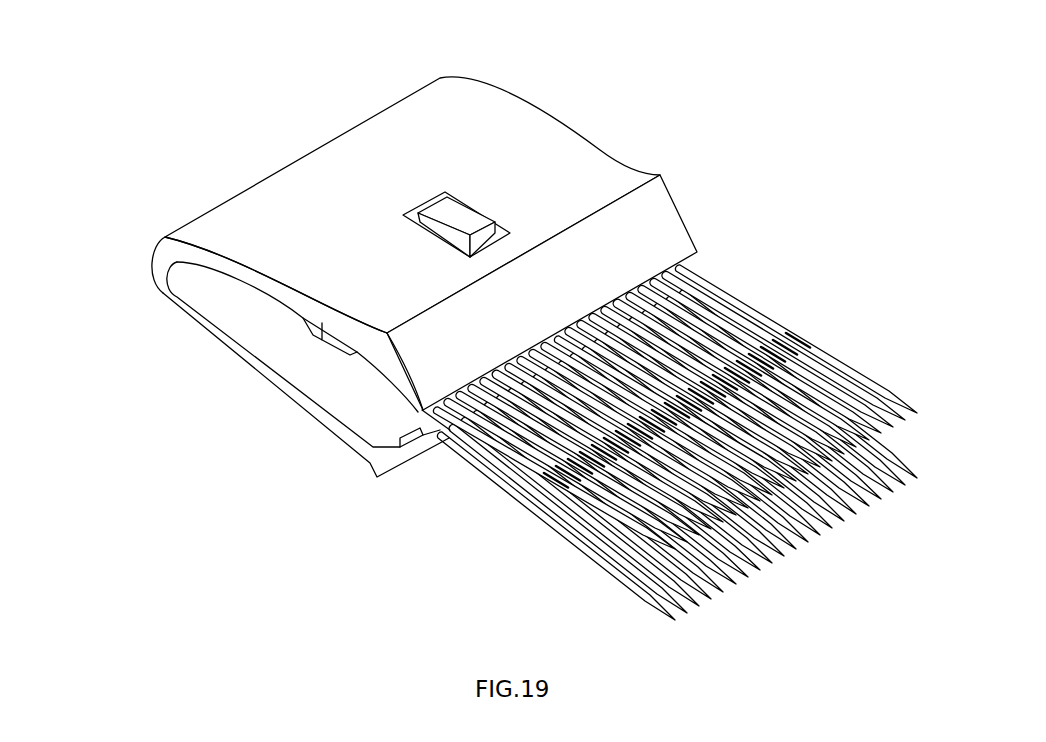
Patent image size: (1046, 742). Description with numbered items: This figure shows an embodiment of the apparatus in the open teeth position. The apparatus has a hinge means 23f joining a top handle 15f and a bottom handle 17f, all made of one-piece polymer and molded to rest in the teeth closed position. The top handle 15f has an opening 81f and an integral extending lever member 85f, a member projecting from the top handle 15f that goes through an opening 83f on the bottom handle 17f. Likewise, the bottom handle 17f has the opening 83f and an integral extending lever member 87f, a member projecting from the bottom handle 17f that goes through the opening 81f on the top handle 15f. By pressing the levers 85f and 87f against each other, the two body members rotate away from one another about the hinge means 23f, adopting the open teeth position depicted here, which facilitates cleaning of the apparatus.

The top handle 15f is at (448, 142).
The bottom handle 17f is at (288, 405).
The hinge means 23f is at (165, 260).
The opening 81f is at (420, 207).
The opening 83f is at (313, 333).
The integral extending lever member 85f is at (328, 334).
The integral extending lever member 87f is at (458, 220).